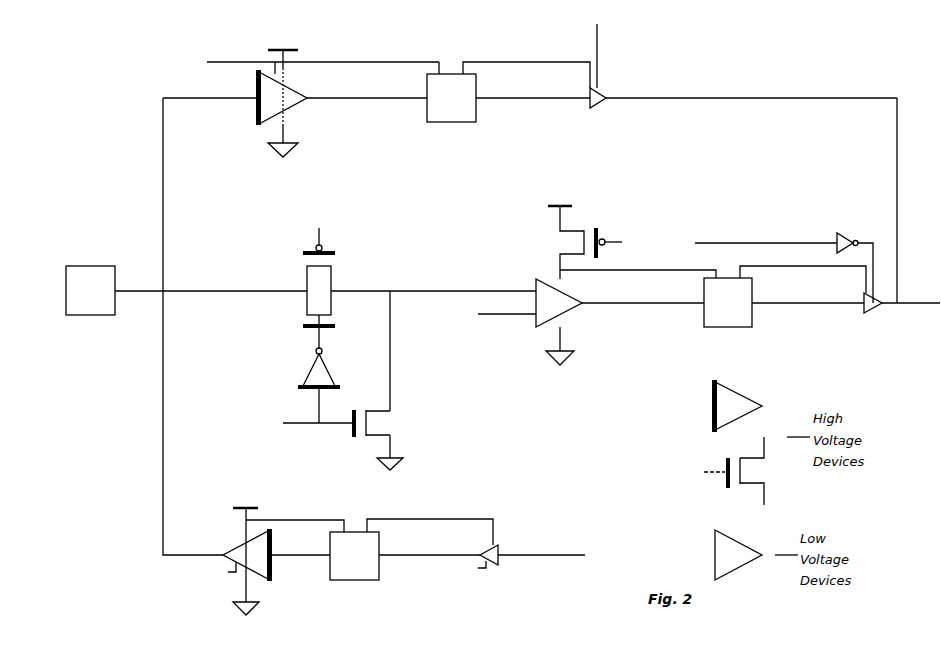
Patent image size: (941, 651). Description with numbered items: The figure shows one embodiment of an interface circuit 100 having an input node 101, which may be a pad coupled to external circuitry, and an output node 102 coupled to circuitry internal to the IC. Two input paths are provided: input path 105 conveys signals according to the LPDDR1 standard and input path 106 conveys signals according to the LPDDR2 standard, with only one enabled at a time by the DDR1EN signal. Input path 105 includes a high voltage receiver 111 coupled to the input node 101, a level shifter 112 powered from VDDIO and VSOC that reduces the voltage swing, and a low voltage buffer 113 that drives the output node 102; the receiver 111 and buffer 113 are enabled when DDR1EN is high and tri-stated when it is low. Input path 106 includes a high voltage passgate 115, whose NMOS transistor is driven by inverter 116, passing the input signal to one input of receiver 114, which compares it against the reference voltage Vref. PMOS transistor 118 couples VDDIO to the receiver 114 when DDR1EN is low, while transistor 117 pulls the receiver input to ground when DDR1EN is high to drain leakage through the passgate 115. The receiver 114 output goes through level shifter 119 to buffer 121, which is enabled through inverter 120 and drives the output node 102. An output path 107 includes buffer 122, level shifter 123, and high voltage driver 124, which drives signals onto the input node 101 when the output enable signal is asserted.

The interface circuit 100 is at (698, 56).
The input node 101 is at (88, 317).
The output node 102 is at (897, 306).
The input path 105 is at (775, 72).
The input path 106 is at (848, 350).
The output path 107 is at (532, 530).
The receiver 111 is at (312, 113).
The level shifter 112 is at (467, 133).
The buffer 113 is at (606, 108).
The receiver 114 is at (572, 318).
The passgate 115 is at (345, 263).
The inverter 116 is at (294, 389).
The transistor 117 is at (398, 426).
The PMOS transistor 118 is at (548, 241).
The level shifter 119 is at (730, 333).
The inverter 120 is at (848, 231).
The buffer 121 is at (866, 312).
The buffer 122 is at (501, 568).
The level shifter 123 is at (368, 585).
The driver 124 is at (233, 539).